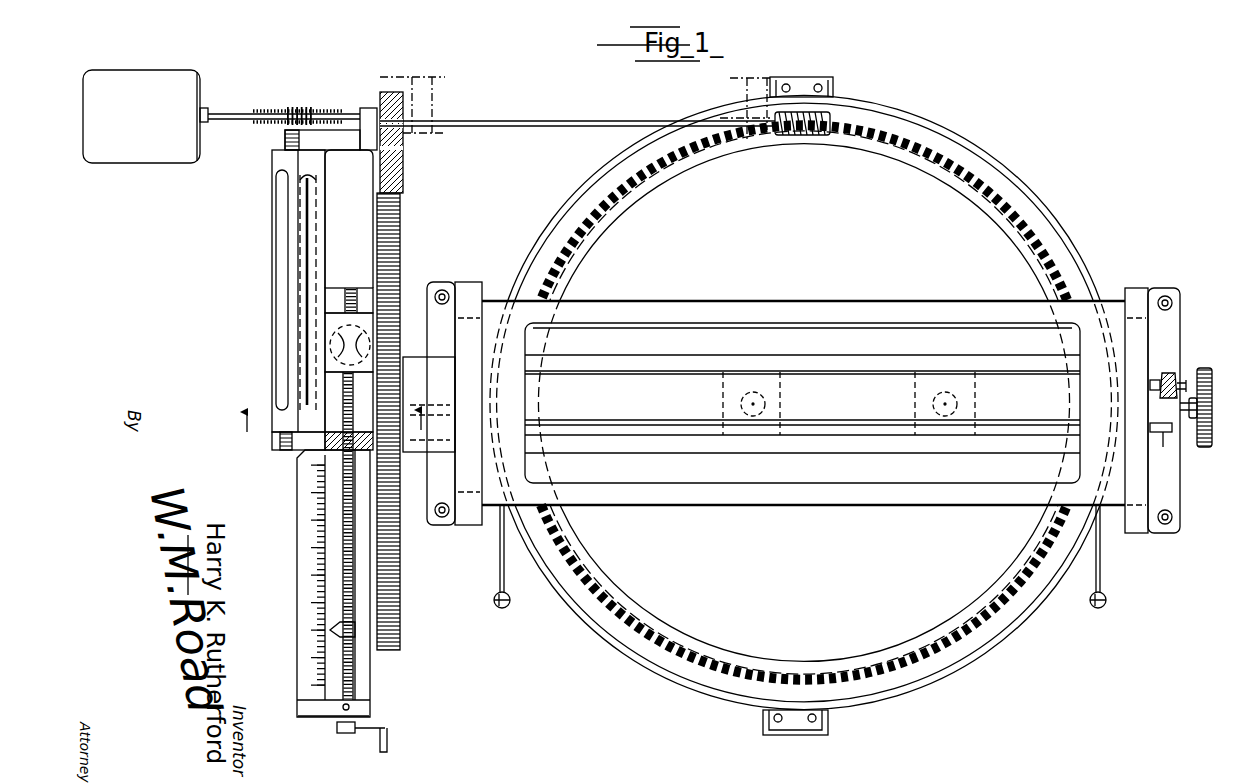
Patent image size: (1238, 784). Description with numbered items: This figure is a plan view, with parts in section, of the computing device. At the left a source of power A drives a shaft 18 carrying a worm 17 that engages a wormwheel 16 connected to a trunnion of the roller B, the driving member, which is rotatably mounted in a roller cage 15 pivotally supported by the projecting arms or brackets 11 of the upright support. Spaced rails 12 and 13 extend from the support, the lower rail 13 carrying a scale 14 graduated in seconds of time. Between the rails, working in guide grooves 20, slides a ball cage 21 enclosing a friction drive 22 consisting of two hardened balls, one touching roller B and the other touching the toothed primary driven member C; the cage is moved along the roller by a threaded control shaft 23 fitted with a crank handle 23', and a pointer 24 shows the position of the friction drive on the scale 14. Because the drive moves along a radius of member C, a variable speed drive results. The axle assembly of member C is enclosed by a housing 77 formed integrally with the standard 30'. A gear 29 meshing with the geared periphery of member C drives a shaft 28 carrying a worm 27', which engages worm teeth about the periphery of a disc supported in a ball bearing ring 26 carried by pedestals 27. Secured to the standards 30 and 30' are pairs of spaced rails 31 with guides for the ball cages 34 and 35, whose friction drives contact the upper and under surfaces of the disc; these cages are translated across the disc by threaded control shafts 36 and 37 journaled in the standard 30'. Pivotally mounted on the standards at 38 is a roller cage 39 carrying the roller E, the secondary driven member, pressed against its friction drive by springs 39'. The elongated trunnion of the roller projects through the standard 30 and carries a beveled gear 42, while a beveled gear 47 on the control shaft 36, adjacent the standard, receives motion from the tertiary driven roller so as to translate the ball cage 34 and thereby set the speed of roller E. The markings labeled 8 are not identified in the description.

The source of power A is at (149, 162).
The roller B is at (272, 276).
The primary driven member C is at (402, 582).
The roller E is at (802, 403).
The direction arrow 8 is at (328, 430).
The projecting arms or brackets 11 is at (285, 138).
The rail 12 is at (349, 219).
The lower rail 13 is at (297, 552).
The scale 14 is at (312, 668).
The roller cage 15 is at (300, 372).
The wormwheel 16 is at (270, 110).
The worm 17 is at (305, 107).
The shaft 18 is at (232, 119).
The guide grooves 20 is at (345, 299).
The ball cage 21 is at (335, 322).
The friction drive 22 is at (330, 346).
The threaded control shaft 23 is at (305, 536).
The crank handle 23' is at (361, 741).
The pointer 24 is at (333, 628).
The ball bearing ring 26 is at (905, 697).
The pedestals 27 is at (798, 404).
The worm 27' is at (832, 107).
The shaft 28 is at (553, 122).
The gear 29 is at (392, 93).
The standard 30 is at (1155, 423).
The standard 30' is at (450, 420).
The rails 31 is at (862, 364).
The ball cage 34 is at (757, 390).
The ball cage 35 is at (950, 390).
The threaded control shaft 36 is at (1193, 396).
The threaded control shaft 37 is at (1173, 437).
The pivot 38 is at (468, 300).
The roller cage 39 is at (803, 391).
The springs 39' is at (800, 567).
The beveled gear 42 is at (1199, 420).
The beveled gear 47 is at (1170, 374).
The housing 77 is at (406, 360).